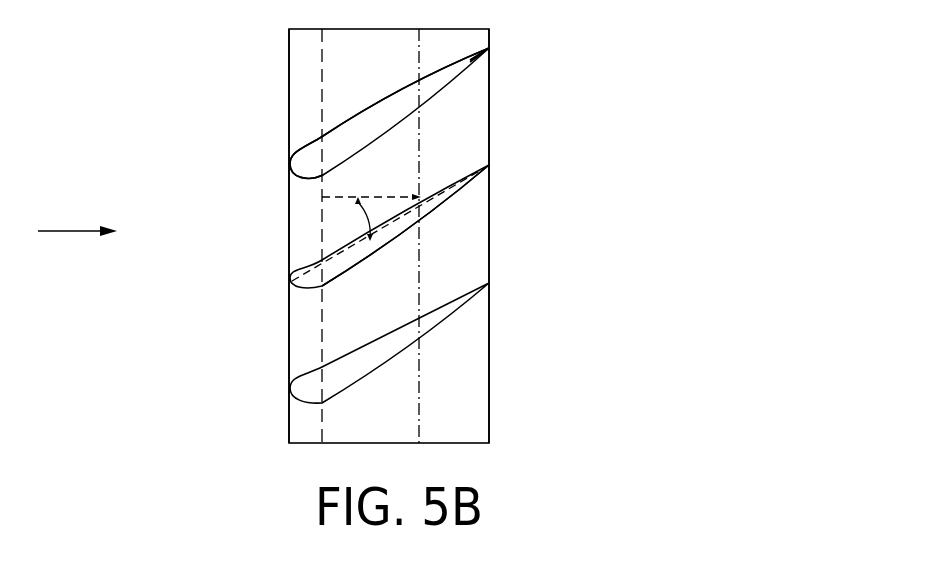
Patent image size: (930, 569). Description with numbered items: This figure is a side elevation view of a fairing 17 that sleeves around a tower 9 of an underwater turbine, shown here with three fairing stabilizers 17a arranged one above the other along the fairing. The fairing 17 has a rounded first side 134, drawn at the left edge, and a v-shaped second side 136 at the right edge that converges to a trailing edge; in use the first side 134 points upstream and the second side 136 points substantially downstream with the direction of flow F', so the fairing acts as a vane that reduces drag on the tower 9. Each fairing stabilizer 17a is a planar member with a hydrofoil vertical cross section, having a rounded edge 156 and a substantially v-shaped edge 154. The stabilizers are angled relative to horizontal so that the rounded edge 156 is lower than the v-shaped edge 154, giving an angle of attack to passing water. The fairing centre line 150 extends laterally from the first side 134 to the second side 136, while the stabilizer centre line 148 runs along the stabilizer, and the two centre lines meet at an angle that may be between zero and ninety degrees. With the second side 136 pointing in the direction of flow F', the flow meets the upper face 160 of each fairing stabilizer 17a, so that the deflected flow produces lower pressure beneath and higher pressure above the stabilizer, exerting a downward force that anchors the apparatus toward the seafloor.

The tower 9 is at (322, 333).
The fairing 17 is at (459, 120).
The fairing stabilizer 17a is at (398, 338).
The first side 134 is at (289, 204).
The second side 136 is at (490, 137).
The stabilizer centre line 148 is at (400, 225).
The fairing centre line 150 is at (397, 195).
The edge 154 is at (478, 47).
The edge 156 is at (296, 168).
The upper face 160 is at (357, 113).
The direction of flow F' is at (77, 218).